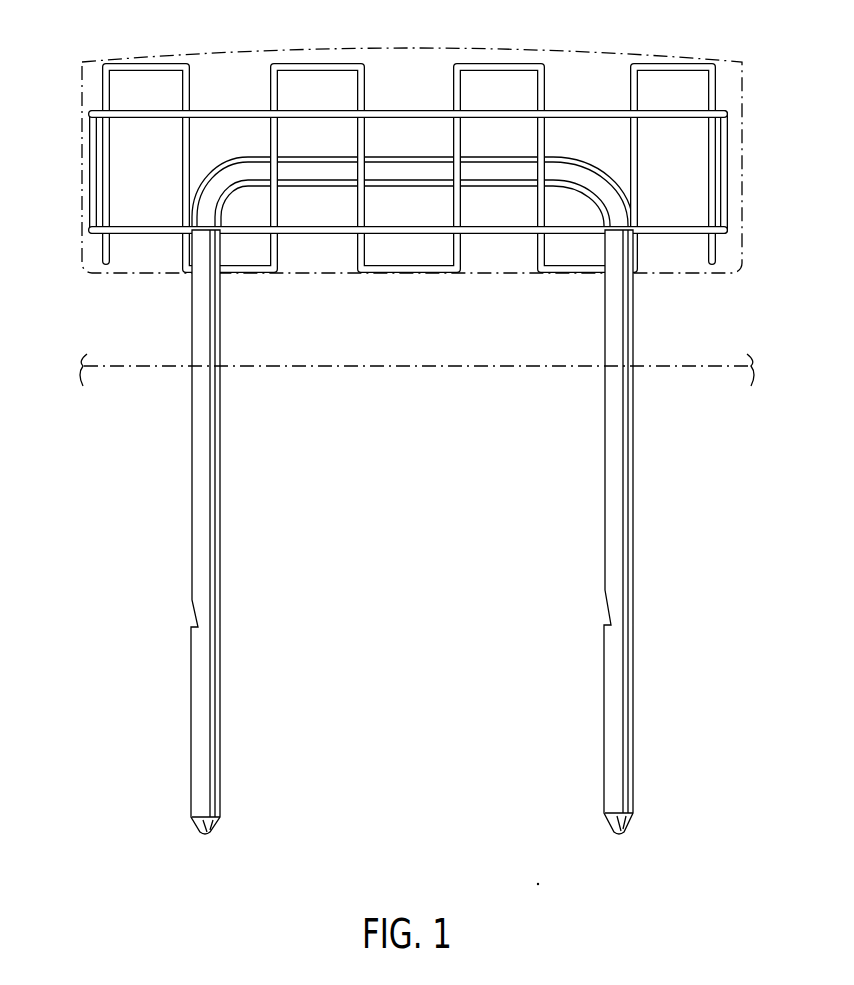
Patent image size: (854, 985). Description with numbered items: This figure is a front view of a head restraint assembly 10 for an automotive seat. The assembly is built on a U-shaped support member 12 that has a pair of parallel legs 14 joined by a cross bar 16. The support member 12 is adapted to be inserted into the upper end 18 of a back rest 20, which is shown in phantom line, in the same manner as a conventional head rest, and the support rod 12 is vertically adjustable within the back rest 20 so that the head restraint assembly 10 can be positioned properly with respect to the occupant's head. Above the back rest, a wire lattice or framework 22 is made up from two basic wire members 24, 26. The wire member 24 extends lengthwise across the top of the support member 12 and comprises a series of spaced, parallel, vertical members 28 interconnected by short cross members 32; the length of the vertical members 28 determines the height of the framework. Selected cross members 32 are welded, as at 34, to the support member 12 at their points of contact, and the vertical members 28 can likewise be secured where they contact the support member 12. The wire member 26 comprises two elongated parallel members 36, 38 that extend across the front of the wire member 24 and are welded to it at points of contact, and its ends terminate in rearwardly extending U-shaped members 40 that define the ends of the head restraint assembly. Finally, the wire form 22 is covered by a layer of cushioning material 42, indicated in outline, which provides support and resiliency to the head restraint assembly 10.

The head restraint assembly 10 is at (344, 402).
The U-shaped support member 12 is at (634, 440).
The parallel legs 14 is at (200, 484).
The cross bar 16 is at (410, 172).
The upper end 18 is at (516, 364).
The back rest 20 is at (432, 427).
The wire lattice or framework 22 is at (402, 280).
The wire member 24 is at (268, 80).
The wire member 26 is at (508, 109).
The vertical members 28 is at (270, 138).
The short cross members 32 is at (327, 63).
The welds 34 is at (187, 278).
The elongated parallel member 36 is at (412, 110).
The elongated parallel member 38 is at (337, 236).
The U-shaped members 40 is at (95, 176).
The cushioning material 42 is at (243, 50).